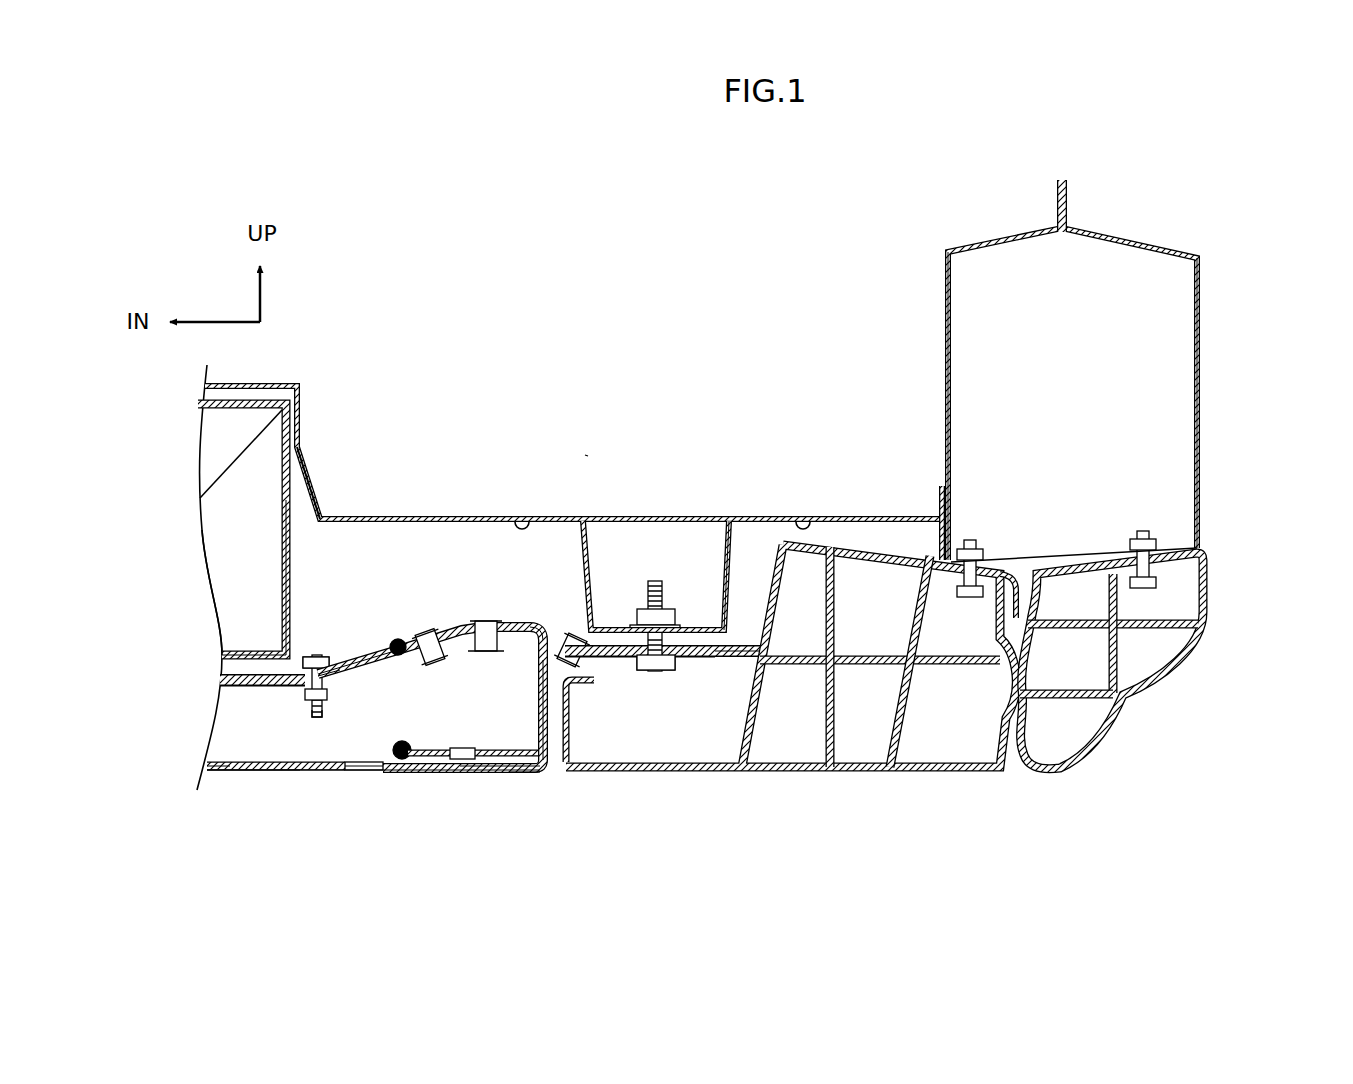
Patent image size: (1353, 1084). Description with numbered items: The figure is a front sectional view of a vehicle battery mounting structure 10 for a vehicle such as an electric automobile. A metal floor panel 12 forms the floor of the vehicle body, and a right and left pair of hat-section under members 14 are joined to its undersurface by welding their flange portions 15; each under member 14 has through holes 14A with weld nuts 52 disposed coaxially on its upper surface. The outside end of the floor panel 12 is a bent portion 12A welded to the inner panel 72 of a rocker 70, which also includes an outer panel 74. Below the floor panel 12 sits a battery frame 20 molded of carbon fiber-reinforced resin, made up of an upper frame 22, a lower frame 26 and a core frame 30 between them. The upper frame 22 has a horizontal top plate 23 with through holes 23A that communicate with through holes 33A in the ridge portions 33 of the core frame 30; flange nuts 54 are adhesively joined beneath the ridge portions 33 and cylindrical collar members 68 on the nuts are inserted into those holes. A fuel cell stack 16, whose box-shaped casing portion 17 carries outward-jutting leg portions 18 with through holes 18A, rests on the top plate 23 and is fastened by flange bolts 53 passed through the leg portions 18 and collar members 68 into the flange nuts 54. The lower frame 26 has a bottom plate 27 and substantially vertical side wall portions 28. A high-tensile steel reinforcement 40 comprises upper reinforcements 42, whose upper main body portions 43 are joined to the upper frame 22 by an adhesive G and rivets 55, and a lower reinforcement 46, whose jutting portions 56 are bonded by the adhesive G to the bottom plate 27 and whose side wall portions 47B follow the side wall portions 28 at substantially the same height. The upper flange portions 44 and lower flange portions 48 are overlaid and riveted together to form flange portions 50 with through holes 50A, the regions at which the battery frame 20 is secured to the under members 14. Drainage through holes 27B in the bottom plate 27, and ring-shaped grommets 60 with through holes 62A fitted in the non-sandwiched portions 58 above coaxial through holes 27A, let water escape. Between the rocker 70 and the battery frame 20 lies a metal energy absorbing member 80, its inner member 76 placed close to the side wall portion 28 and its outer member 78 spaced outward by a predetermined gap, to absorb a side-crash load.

The vehicle battery mounting structure 10 is at (585, 455).
The floor panel 12 is at (423, 519).
The bent portions 12A is at (945, 480).
The under members 14 is at (768, 603).
The through holes 14A is at (738, 582).
The flange portions 15 is at (520, 522).
The fuel cell stack 16 is at (264, 400).
The casing portion 17 is at (300, 492).
The leg portions 18 is at (338, 672).
The through holes 18A is at (335, 668).
The battery frame 20 is at (262, 792).
The upper frame 22 is at (218, 645).
The top plate 23 is at (280, 652).
The through holes 23A is at (238, 662).
The lower frame 26 is at (300, 773).
The bottom plate 27 is at (335, 762).
The through holes 27A is at (488, 771).
The through holes 27B is at (380, 771).
The side wall portions 28 is at (578, 718).
The core frame 30 is at (215, 771).
The ridge portions 33 is at (225, 685).
The through holes 33A is at (250, 692).
The reinforcement 40 is at (501, 679).
The upper reinforcements 42 is at (508, 623).
The upper main body portions 43 is at (521, 627).
The upper flange portions 44 is at (722, 658).
The lower reinforcement 46 is at (560, 772).
The side wall portions 47B is at (541, 692).
The lower flange portions 48 is at (598, 658).
The flange portions 50 is at (724, 670).
The through holes 50A is at (662, 667).
The weld nuts 52 is at (650, 608).
The flange bolts 53 is at (318, 655).
The flange nuts 54 is at (330, 678).
The rivets 55 is at (430, 632).
The jutting portions 56 is at (564, 807).
The non-sandwiched portions 58 is at (520, 775).
The grommets 60 is at (470, 746).
The through holes 62A is at (460, 760).
The collar members 68 is at (318, 716).
The adhesive G is at (400, 640).
The rockers 70 is at (1132, 238).
The inner panel 72 is at (944, 295).
The outer panel 74 is at (1202, 312).
The inner member 76 is at (925, 772).
The outer member 78 is at (1126, 706).
The energy absorbing members 80 is at (1018, 776).